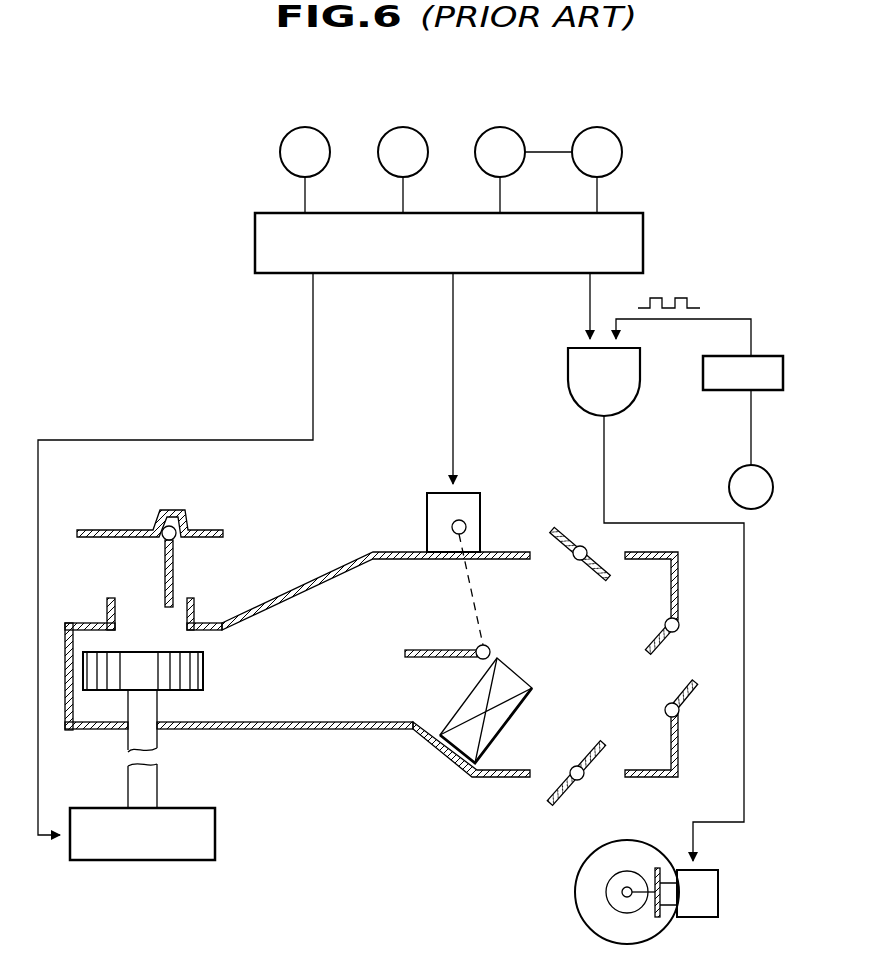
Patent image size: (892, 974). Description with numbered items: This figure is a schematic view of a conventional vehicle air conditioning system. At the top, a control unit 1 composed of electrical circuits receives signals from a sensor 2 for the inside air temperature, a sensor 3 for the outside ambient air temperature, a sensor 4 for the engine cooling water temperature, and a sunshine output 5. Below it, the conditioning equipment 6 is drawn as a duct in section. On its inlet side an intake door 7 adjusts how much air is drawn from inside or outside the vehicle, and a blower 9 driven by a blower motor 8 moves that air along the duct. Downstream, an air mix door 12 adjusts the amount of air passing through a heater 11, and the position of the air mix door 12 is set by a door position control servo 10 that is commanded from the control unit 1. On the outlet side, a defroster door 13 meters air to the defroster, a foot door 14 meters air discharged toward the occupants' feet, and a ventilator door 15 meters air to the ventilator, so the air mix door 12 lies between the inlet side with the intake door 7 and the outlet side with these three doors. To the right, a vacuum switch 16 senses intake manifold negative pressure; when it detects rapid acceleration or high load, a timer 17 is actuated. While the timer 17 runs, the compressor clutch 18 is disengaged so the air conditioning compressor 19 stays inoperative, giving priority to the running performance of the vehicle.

The control unit 1 is at (255, 232).
The inside air temperature sensor 2 is at (622, 149).
The outside air temperature sensor 3 is at (518, 133).
The engine cooling water temperature sensor 4 is at (386, 133).
The sunshine output 5 is at (280, 149).
The conditioning equipment 6 is at (70, 623).
The intake door 7 is at (178, 565).
The blower motor 8 is at (215, 834).
The blower 9 is at (205, 665).
The door position control servo 10 is at (471, 493).
The heater 11 is at (515, 672).
The air mix door 12 is at (410, 660).
The defroster door 13 is at (558, 532).
The foot door 14 is at (566, 785).
The ventilator door 15 is at (670, 690).
The vacuum switch 16 is at (735, 471).
The timer 17 is at (703, 368).
The compressor clutch 18 is at (718, 885).
The air conditioning compressor 19 is at (577, 917).